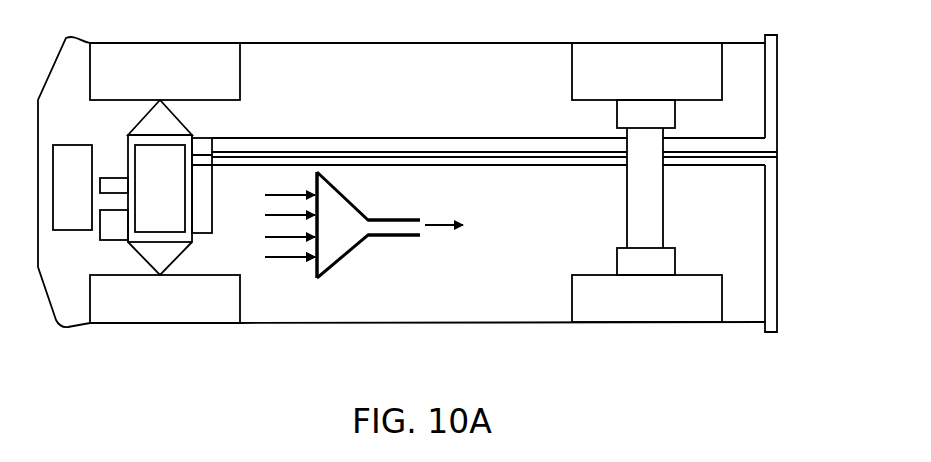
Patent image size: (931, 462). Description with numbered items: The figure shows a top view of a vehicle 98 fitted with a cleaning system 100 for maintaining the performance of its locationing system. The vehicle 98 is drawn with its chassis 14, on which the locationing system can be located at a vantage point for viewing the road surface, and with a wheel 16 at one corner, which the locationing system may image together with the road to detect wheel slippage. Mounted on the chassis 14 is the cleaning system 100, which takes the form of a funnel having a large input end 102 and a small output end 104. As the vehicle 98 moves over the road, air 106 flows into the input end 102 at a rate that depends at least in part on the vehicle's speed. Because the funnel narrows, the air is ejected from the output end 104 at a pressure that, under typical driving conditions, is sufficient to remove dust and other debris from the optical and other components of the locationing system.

The vehicle 98 is at (786, 22).
The chassis 14 is at (415, 108).
The wheel 16 is at (160, 323).
The cleaning system 100 is at (360, 182).
The input end 102 is at (320, 279).
The output end 104 is at (403, 243).
The air 106 is at (260, 245).